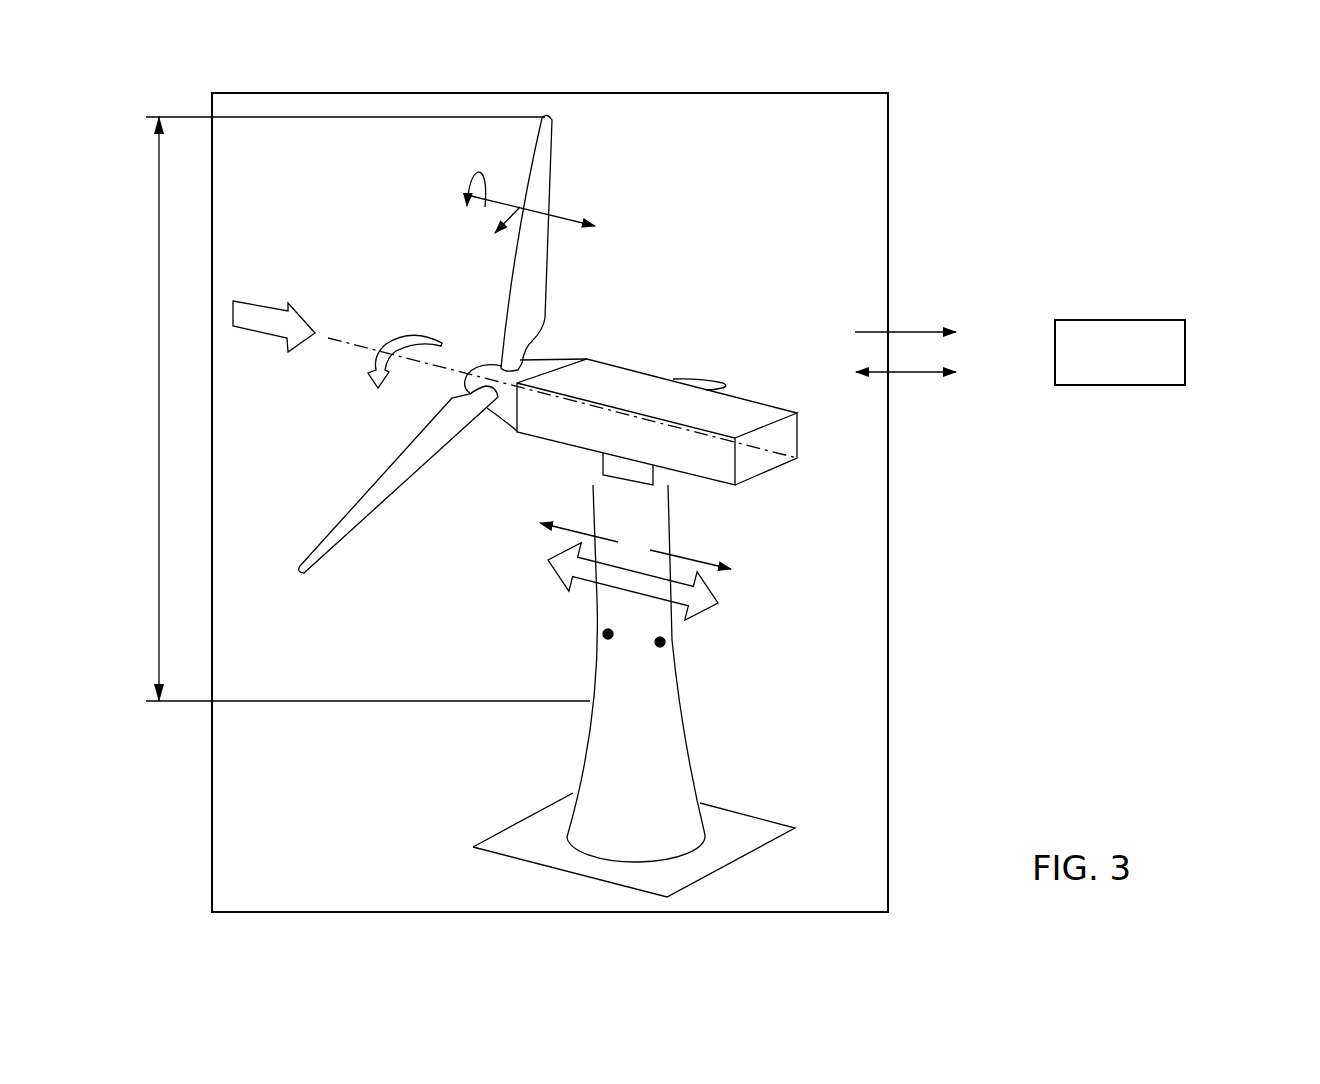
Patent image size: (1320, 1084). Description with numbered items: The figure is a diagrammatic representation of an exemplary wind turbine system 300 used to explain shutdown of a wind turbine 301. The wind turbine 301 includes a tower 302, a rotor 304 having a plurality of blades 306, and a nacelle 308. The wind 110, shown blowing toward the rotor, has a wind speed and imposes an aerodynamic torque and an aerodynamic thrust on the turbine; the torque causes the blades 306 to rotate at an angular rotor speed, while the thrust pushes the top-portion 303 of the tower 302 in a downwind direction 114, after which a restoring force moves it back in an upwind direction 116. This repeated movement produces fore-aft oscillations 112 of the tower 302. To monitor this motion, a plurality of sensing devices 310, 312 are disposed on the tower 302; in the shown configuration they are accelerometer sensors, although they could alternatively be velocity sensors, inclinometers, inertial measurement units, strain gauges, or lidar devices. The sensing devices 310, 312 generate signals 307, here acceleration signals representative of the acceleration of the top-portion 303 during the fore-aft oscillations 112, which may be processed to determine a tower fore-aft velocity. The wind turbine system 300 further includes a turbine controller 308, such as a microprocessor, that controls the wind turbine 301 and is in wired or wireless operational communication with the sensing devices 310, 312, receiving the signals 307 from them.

The wind turbine system 300 is at (1206, 146).
The wind turbine 301 is at (888, 183).
The tower 302 is at (675, 677).
The top-portion of the tower 303 is at (159, 410).
The rotor 304 is at (354, 412).
The blades 306 is at (552, 167).
The signals 307 is at (923, 331).
The turbine controller 308 is at (792, 430).
The sensing device 310 is at (603, 634).
The sensing device 312 is at (665, 642).
The wind 110 is at (262, 303).
The fore-aft oscillations 112 is at (705, 613).
The downwind direction 114 is at (707, 562).
The upwind direction 116 is at (561, 523).